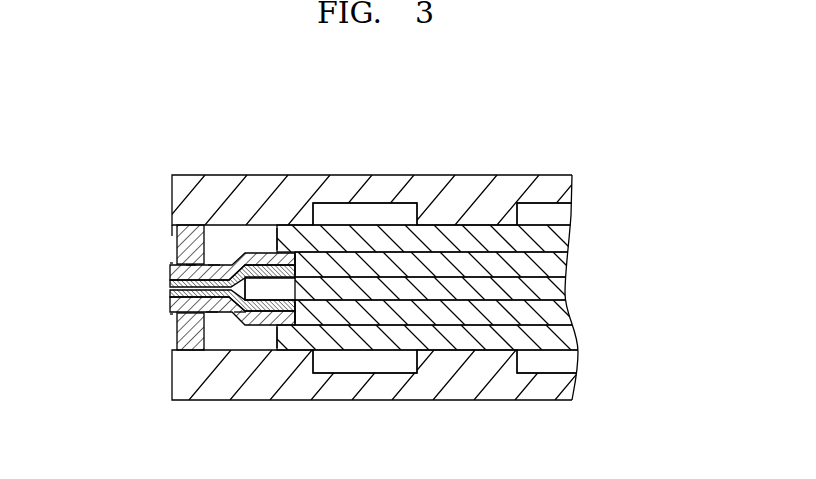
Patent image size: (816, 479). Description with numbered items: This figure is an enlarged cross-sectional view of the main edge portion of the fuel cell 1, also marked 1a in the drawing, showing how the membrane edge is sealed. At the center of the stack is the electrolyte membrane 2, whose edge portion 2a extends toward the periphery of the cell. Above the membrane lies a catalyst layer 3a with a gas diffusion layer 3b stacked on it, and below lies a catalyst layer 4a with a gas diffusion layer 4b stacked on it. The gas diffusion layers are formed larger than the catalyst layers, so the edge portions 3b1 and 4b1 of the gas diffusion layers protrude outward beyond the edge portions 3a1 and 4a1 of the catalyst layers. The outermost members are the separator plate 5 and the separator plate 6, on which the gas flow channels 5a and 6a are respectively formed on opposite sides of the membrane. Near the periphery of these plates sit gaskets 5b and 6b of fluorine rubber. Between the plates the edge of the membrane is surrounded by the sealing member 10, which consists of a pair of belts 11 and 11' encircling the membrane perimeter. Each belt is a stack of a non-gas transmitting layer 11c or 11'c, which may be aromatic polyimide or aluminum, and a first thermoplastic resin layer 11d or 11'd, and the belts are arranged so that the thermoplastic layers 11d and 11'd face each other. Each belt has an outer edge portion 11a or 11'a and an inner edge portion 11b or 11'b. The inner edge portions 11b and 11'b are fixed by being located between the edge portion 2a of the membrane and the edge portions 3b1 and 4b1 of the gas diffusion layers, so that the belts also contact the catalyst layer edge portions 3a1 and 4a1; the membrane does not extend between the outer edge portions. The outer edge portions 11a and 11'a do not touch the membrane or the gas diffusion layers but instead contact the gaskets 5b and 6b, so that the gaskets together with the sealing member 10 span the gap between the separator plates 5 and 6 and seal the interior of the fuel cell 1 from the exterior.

The fuel cell 1 is at (558, 172).
The printed circuit board 1a is at (366, 285).
The electrolyte membrane 2 is at (565, 291).
The edge portion of the electrolyte membrane 2a is at (265, 298).
The catalyst layer 3a is at (470, 260).
The edge portion of the catalyst layer 3a1 is at (287, 256).
The gas diffusion layer 3b is at (492, 242).
The edge portion of the gas diffusion layer 3b1 is at (262, 252).
The catalyst layer 4a is at (455, 312).
The edge portion of the catalyst layer 4a1 is at (291, 320).
The gas diffusion layer 4b is at (492, 335).
The edge portion of the gas diffusion layer 4b1 is at (266, 330).
The separator plate 5 is at (558, 190).
The gas flow channel 5a is at (572, 212).
The gasket 5b is at (180, 232).
The separator plate 6 is at (557, 391).
The gas flow channel 6a is at (568, 360).
The gasket 6b is at (176, 346).
The sealing member 10 is at (176, 228).
The belt 11 is at (191, 256).
The outer edge portion of the belt 11a is at (190, 263).
The inner edge portion of the belt 11b is at (214, 264).
The non-gas transmitting layer 11c is at (174, 262).
The first thermoplastic resin layer 11d is at (170, 283).
The belt 11' is at (185, 315).
The outer edge portion of the belt 11'a is at (183, 387).
The inner edge portion of the belt 11'b is at (227, 388).
The non-gas transmitting layer 11'c is at (121, 337).
The first thermoplastic resin layer 11'd is at (174, 298).